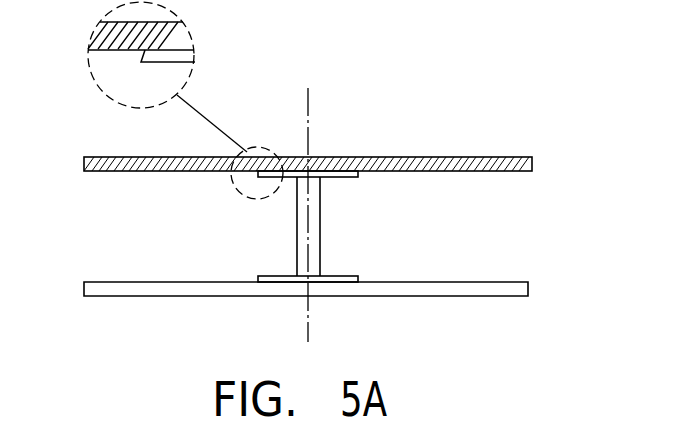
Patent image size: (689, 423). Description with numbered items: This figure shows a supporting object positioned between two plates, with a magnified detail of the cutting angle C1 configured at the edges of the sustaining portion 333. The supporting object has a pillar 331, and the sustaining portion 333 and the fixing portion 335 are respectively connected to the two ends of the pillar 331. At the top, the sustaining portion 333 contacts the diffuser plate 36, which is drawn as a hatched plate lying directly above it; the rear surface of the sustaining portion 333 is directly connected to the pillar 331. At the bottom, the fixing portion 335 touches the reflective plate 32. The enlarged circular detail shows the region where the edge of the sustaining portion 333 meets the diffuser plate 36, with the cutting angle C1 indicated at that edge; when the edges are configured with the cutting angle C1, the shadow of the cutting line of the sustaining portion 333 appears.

The cutting angle C1 is at (137, 57).
The diffuser plate 36 is at (534, 163).
The sustaining portion 333 is at (347, 178).
The pillar 331 is at (316, 230).
The fixing portion 335 is at (345, 278).
The reflective plate 32 is at (530, 288).